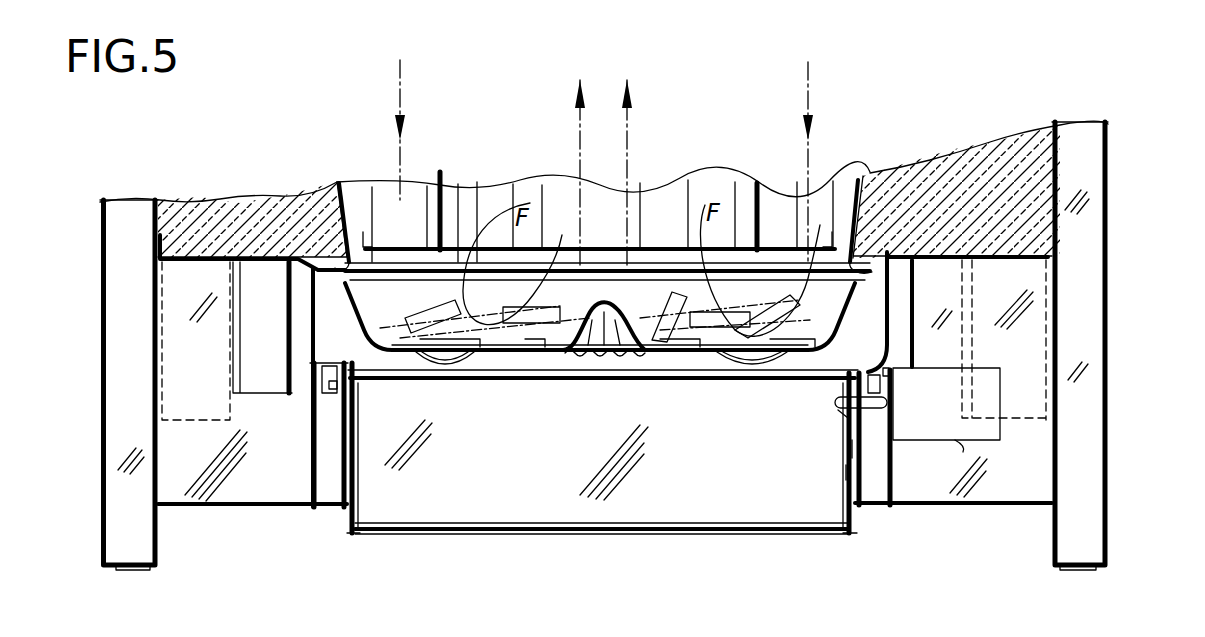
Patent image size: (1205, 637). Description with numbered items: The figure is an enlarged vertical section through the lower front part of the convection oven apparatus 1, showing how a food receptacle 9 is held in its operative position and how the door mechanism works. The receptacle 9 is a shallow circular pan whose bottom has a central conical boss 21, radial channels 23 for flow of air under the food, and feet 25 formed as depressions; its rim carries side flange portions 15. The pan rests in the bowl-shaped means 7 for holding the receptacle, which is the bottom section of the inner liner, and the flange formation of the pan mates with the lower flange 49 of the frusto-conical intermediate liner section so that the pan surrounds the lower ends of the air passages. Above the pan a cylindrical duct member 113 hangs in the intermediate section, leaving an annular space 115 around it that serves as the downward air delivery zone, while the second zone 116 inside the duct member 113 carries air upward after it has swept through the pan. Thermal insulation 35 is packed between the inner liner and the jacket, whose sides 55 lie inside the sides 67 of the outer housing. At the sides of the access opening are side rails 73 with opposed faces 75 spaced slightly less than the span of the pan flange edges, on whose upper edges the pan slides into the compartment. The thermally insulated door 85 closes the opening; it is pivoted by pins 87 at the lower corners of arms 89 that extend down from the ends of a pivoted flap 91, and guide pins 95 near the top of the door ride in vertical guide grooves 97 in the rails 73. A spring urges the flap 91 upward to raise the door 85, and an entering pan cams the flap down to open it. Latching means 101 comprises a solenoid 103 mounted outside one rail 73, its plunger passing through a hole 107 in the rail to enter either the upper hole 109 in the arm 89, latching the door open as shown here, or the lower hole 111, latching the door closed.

The apparatus 1 is at (96, 232).
The means for holding a receptacle 7 is at (306, 338).
The receptacle 9 is at (507, 354).
The side flange portions 15 is at (312, 272).
The conical boss 21 is at (607, 306).
The channels 23 is at (548, 338).
The feet 25 is at (450, 354).
The thermal insulation 35 is at (262, 205).
The lower flange 49 is at (332, 262).
The sides 55 is at (148, 200).
The sides 67 is at (100, 304).
The side rails 73 is at (312, 426).
The opposed faces 75 is at (360, 494).
The door 85 is at (578, 516).
The pins 87 is at (362, 514).
The arms 89 is at (350, 537).
The pivoted flap 91 is at (690, 384).
The guide pins 95 is at (333, 399).
The guide grooves 97 is at (330, 384).
The latching means 101 is at (989, 360).
The solenoid 103 is at (963, 444).
The hole 107 is at (856, 444).
The upper hole 109 is at (843, 414).
The lower hole 111 is at (847, 468).
The cylindrical duct member 113 is at (423, 186).
The annular space 115 is at (373, 187).
The second zone 116 is at (688, 198).